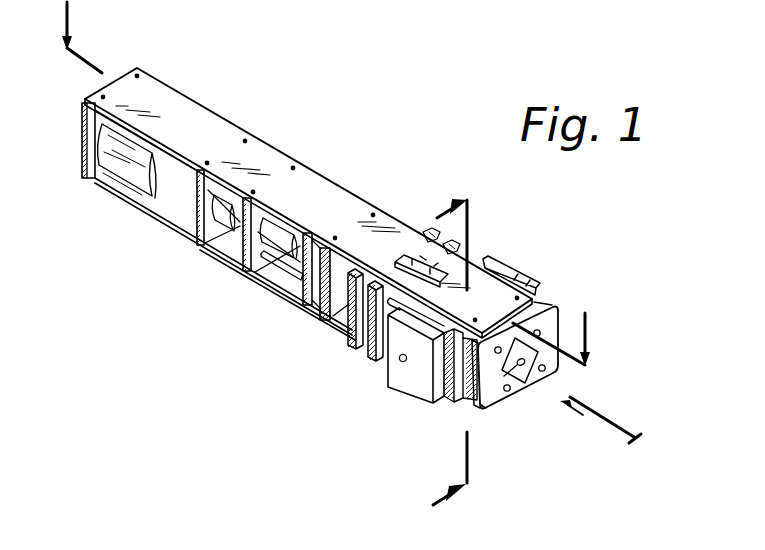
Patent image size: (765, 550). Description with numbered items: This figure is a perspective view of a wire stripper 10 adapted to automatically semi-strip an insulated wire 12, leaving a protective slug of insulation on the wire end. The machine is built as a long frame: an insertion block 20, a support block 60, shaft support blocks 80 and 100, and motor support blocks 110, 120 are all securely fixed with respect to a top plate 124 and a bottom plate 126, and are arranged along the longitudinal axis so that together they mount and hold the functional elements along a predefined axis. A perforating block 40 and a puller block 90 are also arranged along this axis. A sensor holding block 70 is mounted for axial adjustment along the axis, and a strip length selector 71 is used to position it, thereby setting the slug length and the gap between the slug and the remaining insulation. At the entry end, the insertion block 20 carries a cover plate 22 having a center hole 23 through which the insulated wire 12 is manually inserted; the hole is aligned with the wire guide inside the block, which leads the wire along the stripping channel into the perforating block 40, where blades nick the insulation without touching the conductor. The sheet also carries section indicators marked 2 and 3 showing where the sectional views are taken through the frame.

The wire stripper 10 is at (270, 90).
The insulated wire 12 is at (612, 421).
The insertion block 20 is at (544, 306).
The cover plate 22 is at (522, 381).
The center hole 23 is at (479, 402).
The perforating block 40 is at (518, 270).
The support block 60 is at (373, 353).
The sensor holding block 70 is at (353, 342).
The strip length selector 71 is at (398, 258).
The shaft support block 80 is at (325, 310).
The puller block 90 is at (301, 307).
The shaft support block 100 is at (240, 271).
The motor support block 110 is at (193, 242).
The motor support block 120 is at (83, 157).
The top plate 124 is at (323, 210).
The bottom plate 126 is at (283, 278).
The section line 2- 2 is at (329, 203).
The section line 3- 3 is at (466, 342).